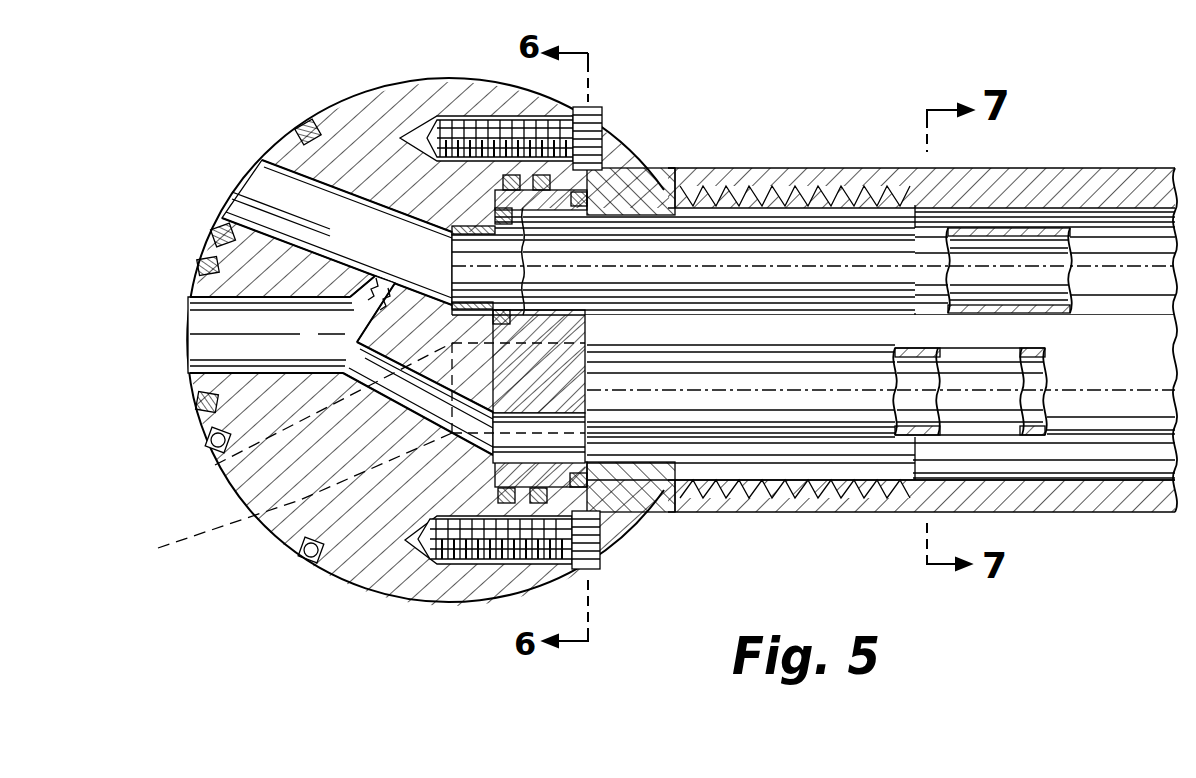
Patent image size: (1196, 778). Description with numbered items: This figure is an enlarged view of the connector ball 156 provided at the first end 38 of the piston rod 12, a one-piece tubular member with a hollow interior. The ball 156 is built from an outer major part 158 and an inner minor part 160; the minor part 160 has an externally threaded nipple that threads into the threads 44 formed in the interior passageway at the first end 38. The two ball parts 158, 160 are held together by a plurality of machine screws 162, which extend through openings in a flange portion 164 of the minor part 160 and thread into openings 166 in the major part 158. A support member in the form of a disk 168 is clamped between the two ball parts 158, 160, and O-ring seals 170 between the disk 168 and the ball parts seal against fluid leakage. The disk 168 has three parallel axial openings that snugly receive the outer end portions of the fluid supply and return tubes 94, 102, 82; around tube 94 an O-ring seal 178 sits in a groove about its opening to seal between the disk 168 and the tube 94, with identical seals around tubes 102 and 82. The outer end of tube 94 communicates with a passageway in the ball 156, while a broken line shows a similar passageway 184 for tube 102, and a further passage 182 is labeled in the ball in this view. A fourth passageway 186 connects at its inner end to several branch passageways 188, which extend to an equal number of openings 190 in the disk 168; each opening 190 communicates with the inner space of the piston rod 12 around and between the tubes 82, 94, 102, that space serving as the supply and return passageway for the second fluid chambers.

The piston rod 12 is at (1032, 170).
The first end 38 is at (762, 168).
The threads 44 is at (877, 215).
The tube 82 is at (988, 437).
The tube 94 is at (930, 305).
The tube 102 is at (845, 415).
The connector ball 156 is at (290, 555).
The outer major part 158 is at (385, 100).
The inner minor part 160 is at (663, 160).
The machine screws 162 is at (487, 120).
The flange portion 164 is at (612, 145).
The openings 166 is at (430, 125).
The disk 168 is at (600, 385).
The O-ring seals 170 is at (595, 490).
The O-ring seal 178 is at (497, 205).
The inclined passage 182 is at (262, 185).
The passageway 184 is at (281, 452).
The fourth passageway 186 is at (200, 340).
The branch passageways 188 is at (452, 262).
The openings 190 is at (587, 440).